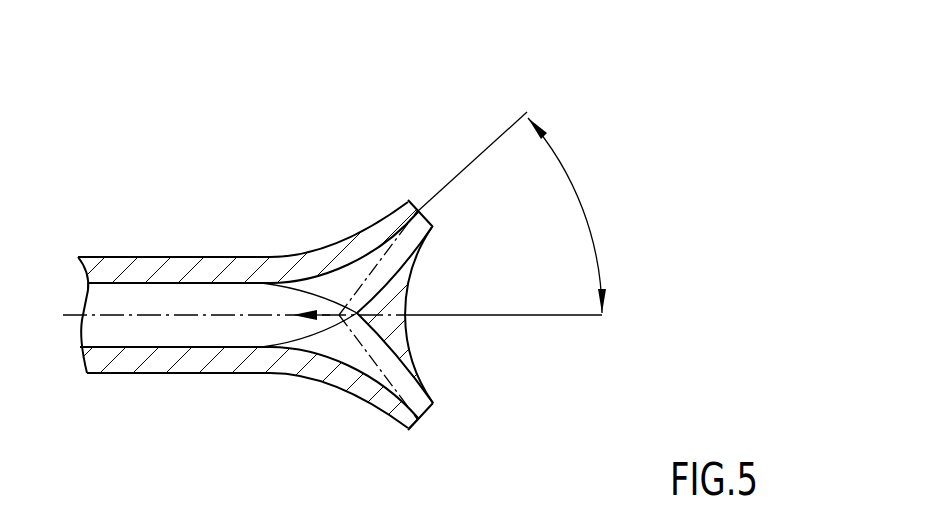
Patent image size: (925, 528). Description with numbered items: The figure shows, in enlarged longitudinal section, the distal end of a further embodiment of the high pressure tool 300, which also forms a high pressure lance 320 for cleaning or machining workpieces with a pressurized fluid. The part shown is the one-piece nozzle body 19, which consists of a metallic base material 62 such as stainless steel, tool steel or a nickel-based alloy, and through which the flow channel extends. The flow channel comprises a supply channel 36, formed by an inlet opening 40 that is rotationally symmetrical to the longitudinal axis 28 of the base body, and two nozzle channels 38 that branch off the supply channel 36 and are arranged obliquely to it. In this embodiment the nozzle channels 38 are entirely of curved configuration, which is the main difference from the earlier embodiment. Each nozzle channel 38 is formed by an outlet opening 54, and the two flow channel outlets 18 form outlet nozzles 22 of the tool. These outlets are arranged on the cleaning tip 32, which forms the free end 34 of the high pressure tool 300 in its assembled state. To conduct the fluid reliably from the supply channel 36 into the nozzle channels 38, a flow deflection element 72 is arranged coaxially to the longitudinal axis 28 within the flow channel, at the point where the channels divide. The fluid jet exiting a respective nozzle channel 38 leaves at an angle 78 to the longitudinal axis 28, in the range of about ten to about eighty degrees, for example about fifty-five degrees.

The nozzle body 19 is at (184, 225).
The metallic base material 62 is at (245, 267).
The nozzle channel 38 is at (366, 238).
The outlet opening 54 is at (418, 210).
The flow channel outlet 18 is at (491, 337).
The outlet nozzle 22 is at (455, 216).
The cleaning tip 32 is at (333, 315).
The free end 34 is at (459, 343).
The flow deflection element 72 is at (404, 306).
The supply channel 36 is at (132, 277).
The inlet opening 40 is at (108, 284).
The longitudinal axis 28 is at (68, 318).
The high pressure tool 300 is at (615, 106).
The high pressure lance 320 is at (682, 133).
The angle 78 is at (590, 224).